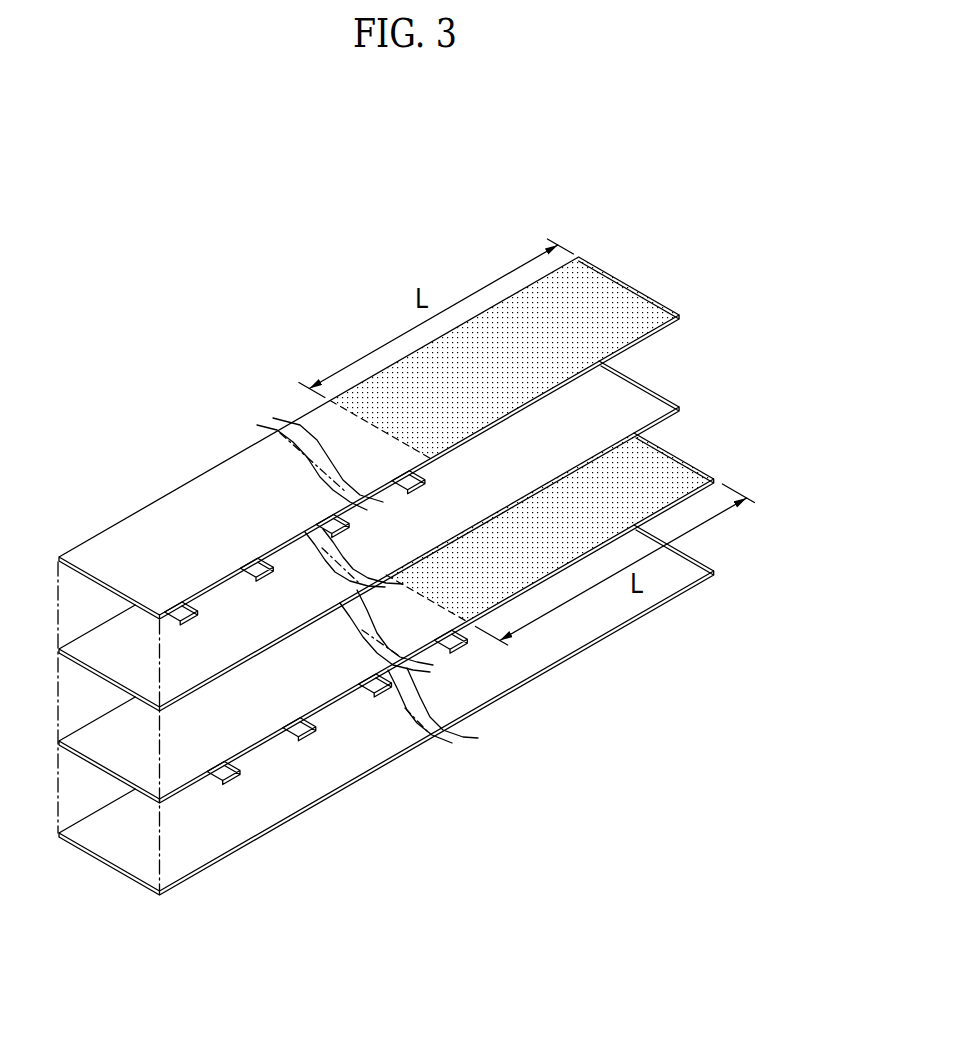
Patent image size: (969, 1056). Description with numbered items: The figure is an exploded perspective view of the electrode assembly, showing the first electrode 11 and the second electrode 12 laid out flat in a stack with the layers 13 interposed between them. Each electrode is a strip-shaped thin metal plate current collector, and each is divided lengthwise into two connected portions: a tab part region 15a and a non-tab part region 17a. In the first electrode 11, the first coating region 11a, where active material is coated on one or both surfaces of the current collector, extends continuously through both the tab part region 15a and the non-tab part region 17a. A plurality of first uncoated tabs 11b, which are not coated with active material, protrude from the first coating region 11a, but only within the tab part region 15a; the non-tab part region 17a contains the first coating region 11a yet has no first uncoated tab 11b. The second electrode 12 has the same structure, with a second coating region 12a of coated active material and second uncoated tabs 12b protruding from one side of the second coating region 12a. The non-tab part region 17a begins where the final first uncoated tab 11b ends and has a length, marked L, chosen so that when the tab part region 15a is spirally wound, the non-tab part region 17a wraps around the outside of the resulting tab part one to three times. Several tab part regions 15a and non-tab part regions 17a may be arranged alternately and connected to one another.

The first electrode 11 is at (268, 311).
The first coating region 11a is at (317, 425).
The first uncoated tab 11b is at (325, 525).
The second electrode 12 is at (585, 758).
The second coating region 12a is at (318, 685).
The second uncoated tab 12b is at (466, 651).
The separator 13 is at (643, 402).
The tab part region 15a is at (222, 518).
The non-tab part region 17a is at (603, 310).